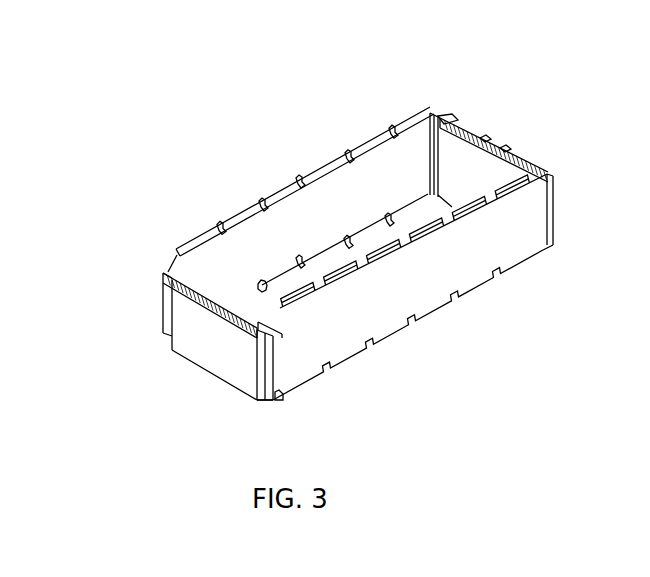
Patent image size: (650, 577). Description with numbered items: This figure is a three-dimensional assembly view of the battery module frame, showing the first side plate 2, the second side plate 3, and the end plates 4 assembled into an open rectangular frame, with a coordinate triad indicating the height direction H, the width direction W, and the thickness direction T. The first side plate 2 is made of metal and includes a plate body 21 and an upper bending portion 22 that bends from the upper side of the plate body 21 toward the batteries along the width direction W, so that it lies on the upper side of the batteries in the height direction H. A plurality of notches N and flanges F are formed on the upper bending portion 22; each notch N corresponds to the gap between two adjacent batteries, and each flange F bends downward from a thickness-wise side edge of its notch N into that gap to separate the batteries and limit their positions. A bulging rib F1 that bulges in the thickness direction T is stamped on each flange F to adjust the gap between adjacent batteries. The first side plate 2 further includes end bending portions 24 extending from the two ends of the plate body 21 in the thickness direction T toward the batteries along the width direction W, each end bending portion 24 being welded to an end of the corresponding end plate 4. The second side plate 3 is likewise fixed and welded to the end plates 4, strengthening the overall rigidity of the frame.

The first side plate 2 is at (267, 176).
The plate body 21 is at (281, 283).
The upper bending portion 22 is at (207, 234).
The end bending portion 24 is at (162, 303).
The second side plate 3 is at (488, 284).
The end plate 4 is at (506, 140).
The notch N is at (298, 257).
The flange F is at (306, 257).
The bulging rib F1 is at (306, 262).
The height direction H is at (127, 121).
The width direction W is at (127, 121).
The thickness direction T is at (127, 121).